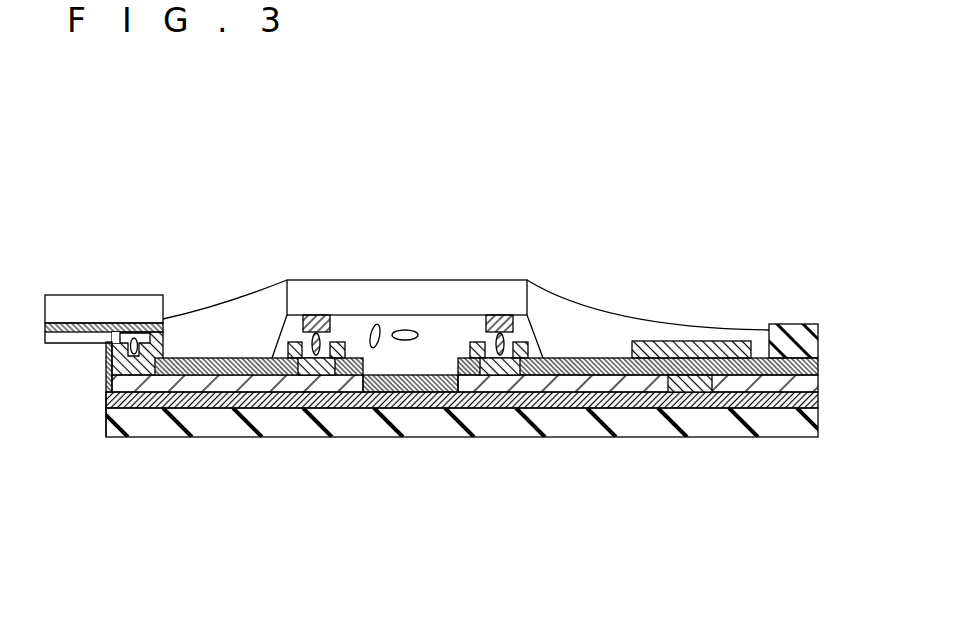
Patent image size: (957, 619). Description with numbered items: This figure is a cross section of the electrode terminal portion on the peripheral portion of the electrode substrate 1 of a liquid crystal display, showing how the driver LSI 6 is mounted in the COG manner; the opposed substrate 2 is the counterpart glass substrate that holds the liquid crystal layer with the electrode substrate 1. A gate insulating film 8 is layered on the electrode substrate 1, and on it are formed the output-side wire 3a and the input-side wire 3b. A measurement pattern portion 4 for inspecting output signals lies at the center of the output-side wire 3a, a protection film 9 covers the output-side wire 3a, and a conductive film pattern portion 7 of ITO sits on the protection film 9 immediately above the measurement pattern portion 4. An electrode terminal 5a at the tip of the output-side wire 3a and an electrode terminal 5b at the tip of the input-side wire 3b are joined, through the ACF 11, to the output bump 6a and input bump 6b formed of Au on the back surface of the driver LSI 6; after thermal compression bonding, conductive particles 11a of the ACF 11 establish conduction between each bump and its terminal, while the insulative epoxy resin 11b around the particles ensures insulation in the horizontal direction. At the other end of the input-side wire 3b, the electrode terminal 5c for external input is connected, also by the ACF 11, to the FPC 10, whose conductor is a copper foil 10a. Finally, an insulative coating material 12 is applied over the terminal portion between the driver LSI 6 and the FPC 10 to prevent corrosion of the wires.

The electrode substrate 1 is at (803, 422).
The opposed substrate 2 is at (805, 337).
The output-side wire 3a is at (582, 380).
The input-side wire 3b is at (222, 383).
The measurement pattern portion 4 is at (688, 380).
The electrode terminal 5a is at (503, 377).
The electrode terminal 5b is at (322, 376).
The electrode terminal for external input 5c is at (140, 373).
The driver LSI 6 is at (407, 296).
The output bump 6a is at (503, 315).
The input bump 6b is at (316, 315).
The conductive film pattern portion 7 is at (662, 341).
The gate insulating film 8 is at (822, 400).
The protection film 9 is at (818, 367).
The FPC 10 is at (104, 287).
The copper foil 10a is at (67, 327).
The ACF 11 is at (429, 247).
The conductive particles 11a is at (403, 328).
The insulative epoxy resin 11b is at (458, 332).
The coating material 12 is at (230, 315).